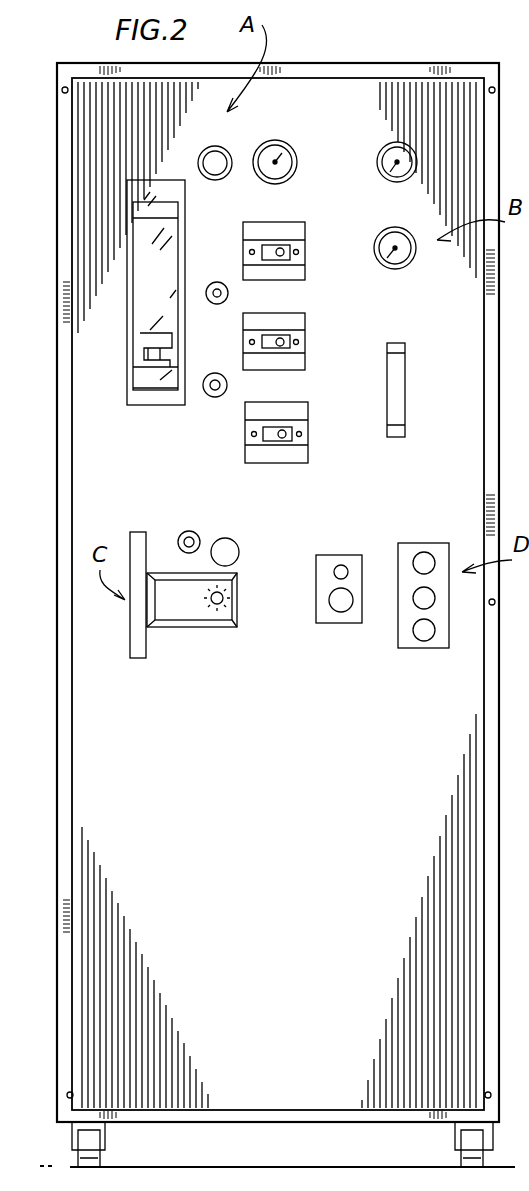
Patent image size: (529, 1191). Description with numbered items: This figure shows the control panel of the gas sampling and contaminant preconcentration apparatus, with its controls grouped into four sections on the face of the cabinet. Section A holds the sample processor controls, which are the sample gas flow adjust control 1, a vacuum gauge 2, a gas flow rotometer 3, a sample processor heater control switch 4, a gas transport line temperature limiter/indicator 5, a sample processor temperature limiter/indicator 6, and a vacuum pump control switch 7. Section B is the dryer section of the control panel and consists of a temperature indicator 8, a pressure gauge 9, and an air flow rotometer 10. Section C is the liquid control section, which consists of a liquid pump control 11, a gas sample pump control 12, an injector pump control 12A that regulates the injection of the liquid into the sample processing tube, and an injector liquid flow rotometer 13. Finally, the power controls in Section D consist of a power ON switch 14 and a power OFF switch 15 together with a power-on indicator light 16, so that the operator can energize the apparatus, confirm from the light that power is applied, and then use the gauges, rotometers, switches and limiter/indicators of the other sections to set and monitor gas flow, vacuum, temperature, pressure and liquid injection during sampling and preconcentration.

The sample gas flow adjust control 1 is at (215, 168).
The vacuum gauge 2 is at (280, 180).
The gas flow rotometer 3 is at (160, 284).
The sample processor heater control switch 4 is at (216, 281).
The gas transport line temperature limiter/indicator 5 is at (252, 228).
The sample processor temperature limiter/indicator 6 is at (250, 322).
The vacuum pump control switch 7 is at (215, 373).
The temperature indicator 8 is at (378, 158).
The pressure gauge 9 is at (381, 232).
The air flow rotometer 10 is at (396, 396).
The liquid pump control 11 is at (189, 530).
The gas sample pump control 12 is at (207, 616).
The injector pump control 12A is at (343, 606).
The injector liquid flow rotometer 13 is at (139, 537).
The power ON switch 14 is at (432, 598).
The power OFF switch 15 is at (428, 636).
The power-on indicator light 16 is at (424, 558).